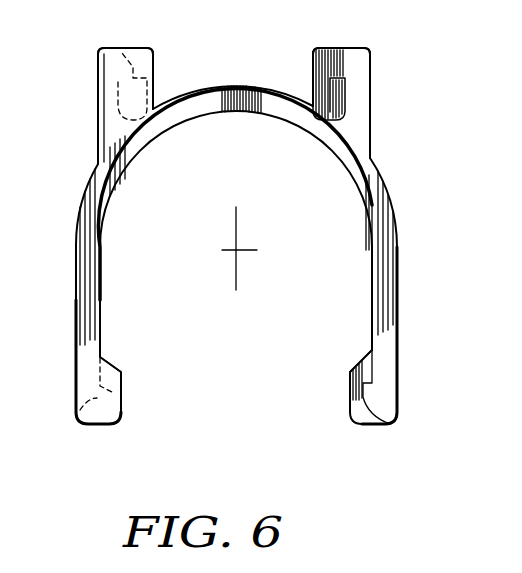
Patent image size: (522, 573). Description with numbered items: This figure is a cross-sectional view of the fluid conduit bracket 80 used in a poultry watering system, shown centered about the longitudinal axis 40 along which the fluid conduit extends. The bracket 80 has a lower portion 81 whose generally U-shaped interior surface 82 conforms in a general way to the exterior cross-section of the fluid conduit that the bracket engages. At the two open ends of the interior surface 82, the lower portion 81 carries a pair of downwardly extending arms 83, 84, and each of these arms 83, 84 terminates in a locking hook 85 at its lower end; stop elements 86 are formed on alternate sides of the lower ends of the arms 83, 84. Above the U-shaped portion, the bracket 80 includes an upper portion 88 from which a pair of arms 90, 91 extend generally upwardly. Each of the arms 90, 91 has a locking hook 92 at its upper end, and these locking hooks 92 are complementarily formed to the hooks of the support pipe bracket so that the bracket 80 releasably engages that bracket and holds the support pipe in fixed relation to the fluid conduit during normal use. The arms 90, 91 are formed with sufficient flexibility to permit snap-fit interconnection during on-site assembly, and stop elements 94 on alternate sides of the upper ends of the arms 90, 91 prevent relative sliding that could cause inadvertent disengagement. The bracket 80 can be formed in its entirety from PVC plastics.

The longitudinal axis 40 is at (236, 249).
The fluid conduit bracket 80 is at (404, 149).
The lower portion 81 is at (404, 274).
The interior surface 82 is at (372, 297).
The arm 83 is at (390, 350).
The arm 84 is at (77, 343).
The locking hook 85 is at (70, 418).
The stop element 86 is at (121, 412).
The upper portion 88 is at (377, 108).
The arm 90 is at (357, 88).
The arm 91 is at (98, 95).
The locking hook 92 is at (336, 73).
The stop element 94 is at (318, 60).